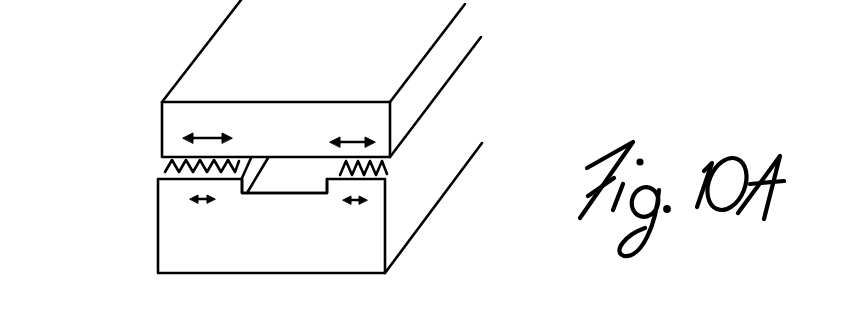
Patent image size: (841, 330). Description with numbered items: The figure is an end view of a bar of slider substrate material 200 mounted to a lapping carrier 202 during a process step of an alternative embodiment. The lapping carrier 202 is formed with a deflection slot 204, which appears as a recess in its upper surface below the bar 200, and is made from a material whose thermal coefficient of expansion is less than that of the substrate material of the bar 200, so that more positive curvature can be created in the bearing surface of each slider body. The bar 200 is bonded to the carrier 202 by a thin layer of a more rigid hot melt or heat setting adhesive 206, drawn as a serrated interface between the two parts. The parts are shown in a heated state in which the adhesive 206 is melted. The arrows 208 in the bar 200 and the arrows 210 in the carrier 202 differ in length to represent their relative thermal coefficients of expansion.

The bar of slider substrate material 200 is at (160, 110).
The lapping carrier 202 is at (158, 208).
The deflection slot 204 is at (290, 193).
The hot melt adhesive 206 is at (158, 165).
The arrows representing bar thermal expansion 208 is at (352, 136).
The arrows representing carrier thermal expansion 210 is at (356, 209).